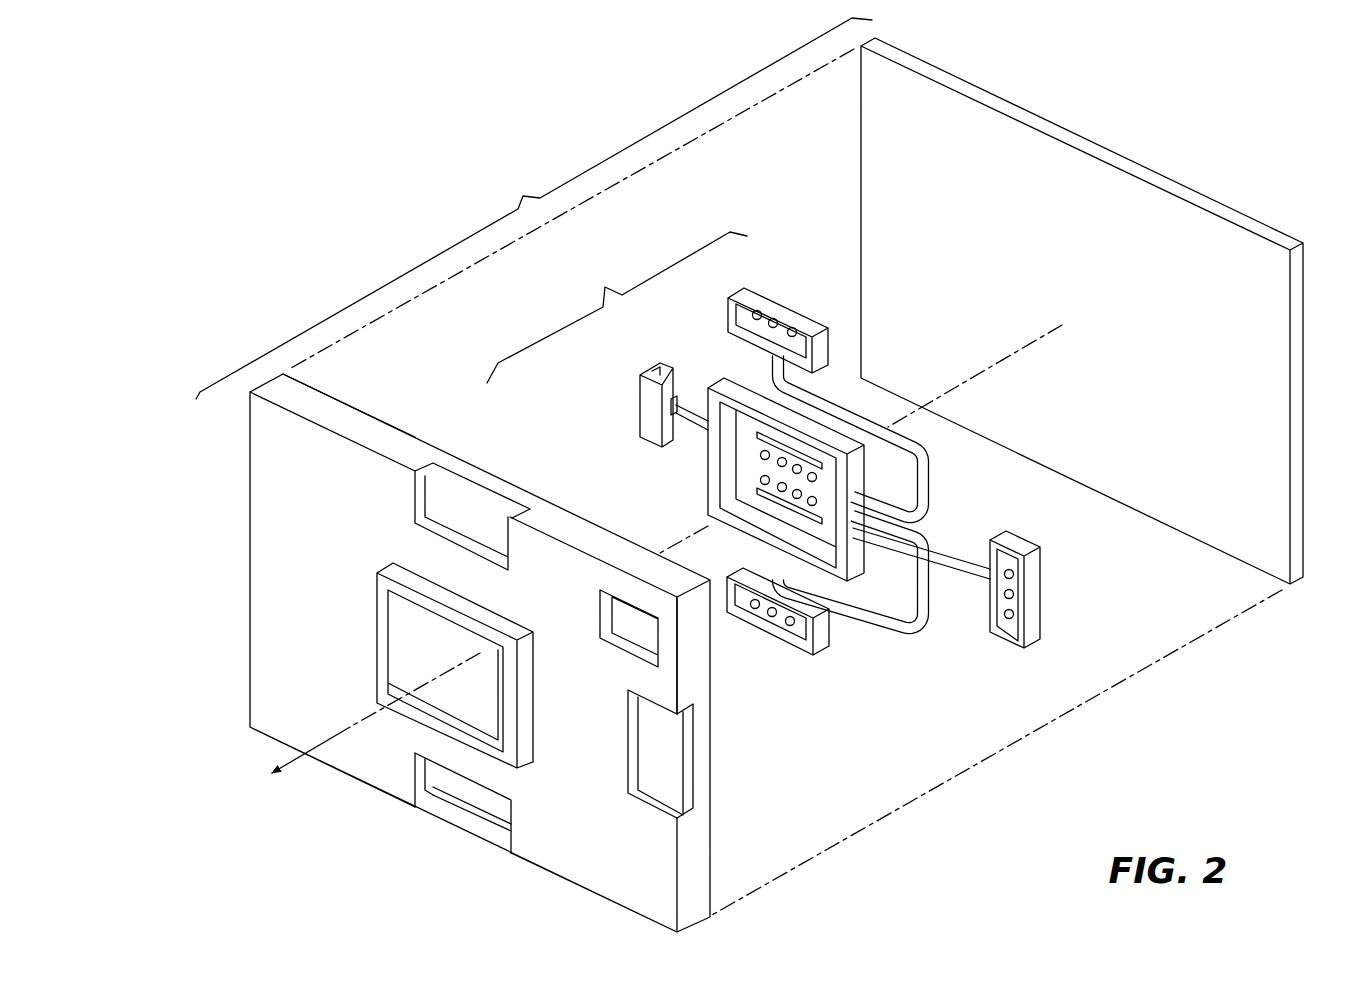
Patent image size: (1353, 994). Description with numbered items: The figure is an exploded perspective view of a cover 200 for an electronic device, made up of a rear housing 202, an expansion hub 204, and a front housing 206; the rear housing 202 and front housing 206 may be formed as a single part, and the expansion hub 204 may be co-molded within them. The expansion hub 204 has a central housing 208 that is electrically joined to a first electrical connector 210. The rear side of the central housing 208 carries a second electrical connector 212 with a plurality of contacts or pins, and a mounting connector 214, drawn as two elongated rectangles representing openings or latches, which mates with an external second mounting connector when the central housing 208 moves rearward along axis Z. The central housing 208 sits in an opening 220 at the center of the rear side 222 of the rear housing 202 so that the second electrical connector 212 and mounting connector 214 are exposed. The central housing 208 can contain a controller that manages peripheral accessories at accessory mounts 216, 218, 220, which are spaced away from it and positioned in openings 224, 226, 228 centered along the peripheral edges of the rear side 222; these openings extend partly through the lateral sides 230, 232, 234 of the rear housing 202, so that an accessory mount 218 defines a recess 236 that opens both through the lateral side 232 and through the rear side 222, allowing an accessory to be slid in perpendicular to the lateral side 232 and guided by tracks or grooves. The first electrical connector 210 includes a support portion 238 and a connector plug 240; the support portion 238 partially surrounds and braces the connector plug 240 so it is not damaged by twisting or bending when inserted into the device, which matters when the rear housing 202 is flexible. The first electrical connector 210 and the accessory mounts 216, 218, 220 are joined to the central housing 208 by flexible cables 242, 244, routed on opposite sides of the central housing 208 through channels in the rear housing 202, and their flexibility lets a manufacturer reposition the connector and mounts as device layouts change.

The cover 200 is at (534, 208).
The rear housing 202 is at (421, 653).
The expansion hub 204 is at (617, 307).
The front housing 206 is at (1020, 100).
The central housing 208 is at (714, 460).
The first electrical connector 210 is at (629, 402).
The second electrical connector 212 is at (757, 468).
The mounting connector 214 is at (838, 473).
The accessory mount 216 is at (789, 308).
The accessory mount 218 is at (1036, 590).
The accessory mount / opening 220 is at (465, 723).
The rear side 222 is at (267, 487).
The opening 224 is at (435, 481).
The opening 226 is at (660, 800).
The opening 228 is at (507, 813).
The lateral side 230 is at (305, 397).
The lateral side 232 is at (697, 878).
The lateral side 234 is at (458, 808).
The recess 236 is at (1017, 623).
The support portion 238 is at (640, 395).
The connector plug 240 is at (681, 402).
The flexible cable 242 is at (690, 436).
The flexible cable 244 is at (929, 495).